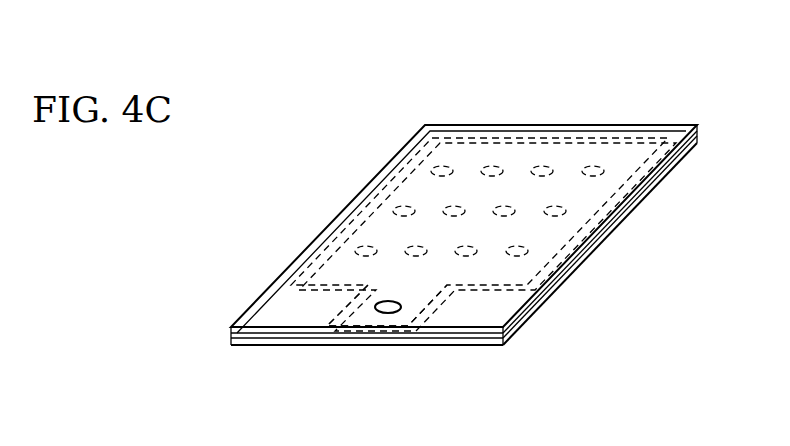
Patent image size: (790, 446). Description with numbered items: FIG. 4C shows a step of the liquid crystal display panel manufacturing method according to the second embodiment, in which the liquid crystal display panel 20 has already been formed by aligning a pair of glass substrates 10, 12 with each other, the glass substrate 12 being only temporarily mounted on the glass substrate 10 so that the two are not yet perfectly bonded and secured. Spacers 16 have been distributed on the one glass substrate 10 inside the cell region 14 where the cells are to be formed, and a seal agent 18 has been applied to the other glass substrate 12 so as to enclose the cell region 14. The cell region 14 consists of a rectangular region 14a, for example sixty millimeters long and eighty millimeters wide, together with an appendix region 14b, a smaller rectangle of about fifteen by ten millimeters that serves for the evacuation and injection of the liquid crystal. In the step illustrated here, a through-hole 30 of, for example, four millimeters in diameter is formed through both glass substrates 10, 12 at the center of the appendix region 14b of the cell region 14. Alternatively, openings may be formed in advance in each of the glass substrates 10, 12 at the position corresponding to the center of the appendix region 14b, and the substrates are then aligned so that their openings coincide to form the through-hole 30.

The glass substrate 10 is at (523, 323).
The glass substrate 12 is at (553, 280).
The cell region 14 is at (243, 183).
The rectangular region 14a is at (387, 237).
The appendix region 14b is at (367, 312).
The spacers 16 is at (528, 252).
The seal agent 18 is at (677, 167).
The liquid crystal display panel 20 is at (603, 116).
The through-hole 30 is at (401, 308).